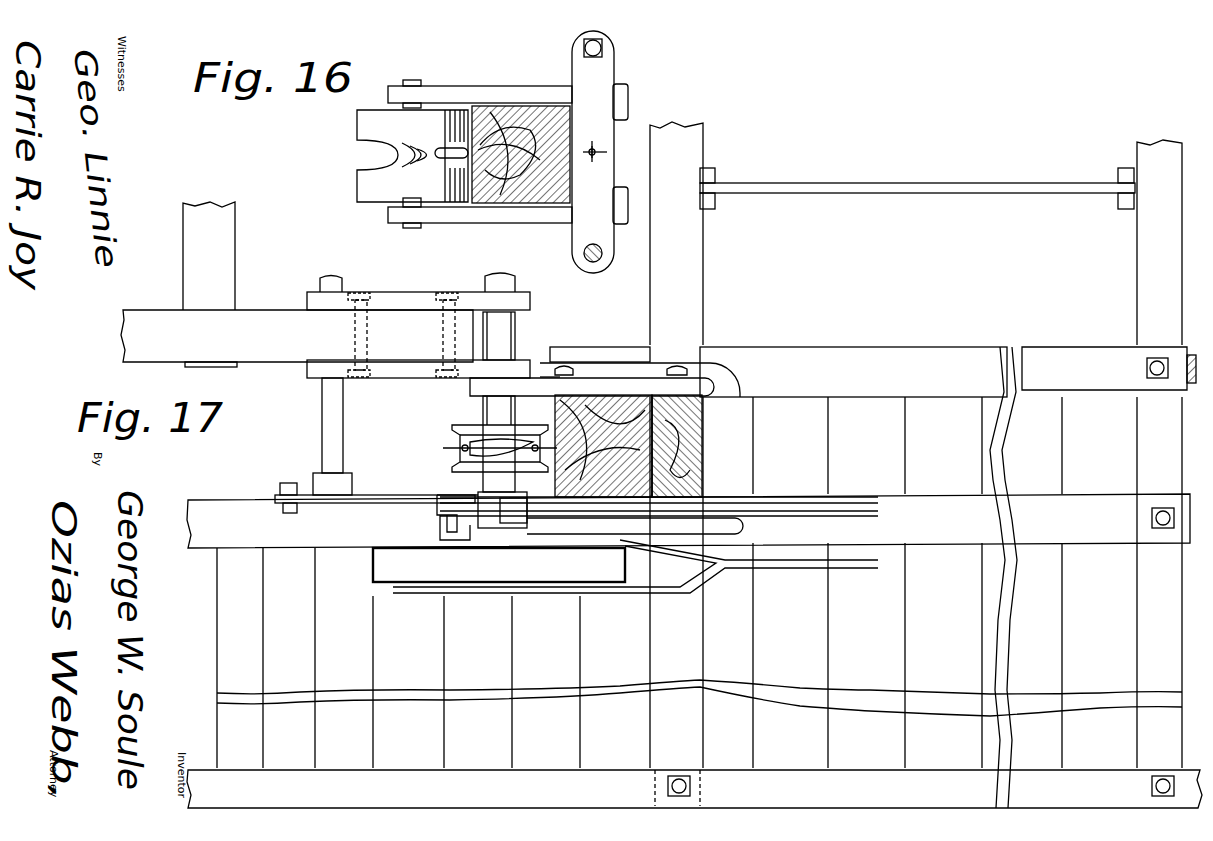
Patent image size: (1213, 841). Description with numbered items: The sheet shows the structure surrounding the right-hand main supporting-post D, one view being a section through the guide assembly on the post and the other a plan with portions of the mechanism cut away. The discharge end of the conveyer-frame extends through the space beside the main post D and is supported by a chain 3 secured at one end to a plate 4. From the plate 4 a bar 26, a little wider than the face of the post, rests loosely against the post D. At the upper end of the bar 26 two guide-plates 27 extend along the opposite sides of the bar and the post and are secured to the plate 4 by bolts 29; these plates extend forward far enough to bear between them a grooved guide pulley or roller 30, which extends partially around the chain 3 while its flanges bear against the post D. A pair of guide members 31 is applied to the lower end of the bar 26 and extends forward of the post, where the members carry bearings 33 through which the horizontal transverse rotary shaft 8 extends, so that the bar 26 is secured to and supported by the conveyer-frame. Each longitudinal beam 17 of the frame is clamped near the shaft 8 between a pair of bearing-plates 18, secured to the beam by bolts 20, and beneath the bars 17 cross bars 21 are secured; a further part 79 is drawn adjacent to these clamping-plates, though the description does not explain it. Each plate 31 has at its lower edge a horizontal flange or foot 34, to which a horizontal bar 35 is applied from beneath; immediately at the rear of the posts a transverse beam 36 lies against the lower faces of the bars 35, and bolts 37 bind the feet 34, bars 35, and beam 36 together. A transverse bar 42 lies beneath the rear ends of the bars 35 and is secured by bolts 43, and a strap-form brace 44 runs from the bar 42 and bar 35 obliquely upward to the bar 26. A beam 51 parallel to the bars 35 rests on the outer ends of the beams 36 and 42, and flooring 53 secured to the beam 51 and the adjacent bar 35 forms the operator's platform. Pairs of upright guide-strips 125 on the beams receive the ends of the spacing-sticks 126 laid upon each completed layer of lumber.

In FIG. 16, the chain 3 is at (450, 170).
In FIG. 16, the plate 4 is at (608, 138).
In FIG. 17, the plate 4 is at (497, 482).
In FIG. 17, the horizontal transverse rotary shaft 8 is at (508, 272).
In FIG. 17, the beam or bar 17 is at (297, 337).
In FIG. 17, the bearing-plates 18 is at (412, 298).
In FIG. 17, the bolts 20 is at (458, 282).
In FIG. 17, the cross bars or beams 21 is at (224, 256).
In FIG. 16, the bar 26 is at (577, 198).
In FIG. 17, the bar 26 is at (702, 430).
In FIG. 16, the guide-plates 27 is at (448, 93).
In FIG. 16, the bolts 29 is at (603, 47).
In FIG. 16, the guide pulley or roller 30 is at (357, 126).
In FIG. 17, the guide members 31 is at (604, 363).
In FIG. 17, the bearings 33 is at (470, 392).
In FIG. 17, the lateral horizontal flange or foot 34 is at (590, 537).
In FIG. 17, the horizontal bar 35 is at (948, 497).
In FIG. 17, the beam 36 is at (1163, 776).
In FIG. 17, the bolts 37 is at (565, 366).
In FIG. 17, the bar 42 is at (1135, 265).
In FIG. 17, the bolts 43 is at (1146, 368).
In FIG. 17, the strap-form brace 44 is at (1199, 349).
In FIG. 17, the beam 51 is at (694, 789).
In FIG. 17, the flooring 53 is at (699, 577).
In FIG. 17, the rod 79 is at (528, 290).
In FIG. 17, the upright guide-strips 125 is at (716, 172).
In FIG. 17, the spacing-sticks 126 is at (888, 183).
In FIG. 16, the main post D is at (555, 216).
In FIG. 17, the main post D is at (650, 397).